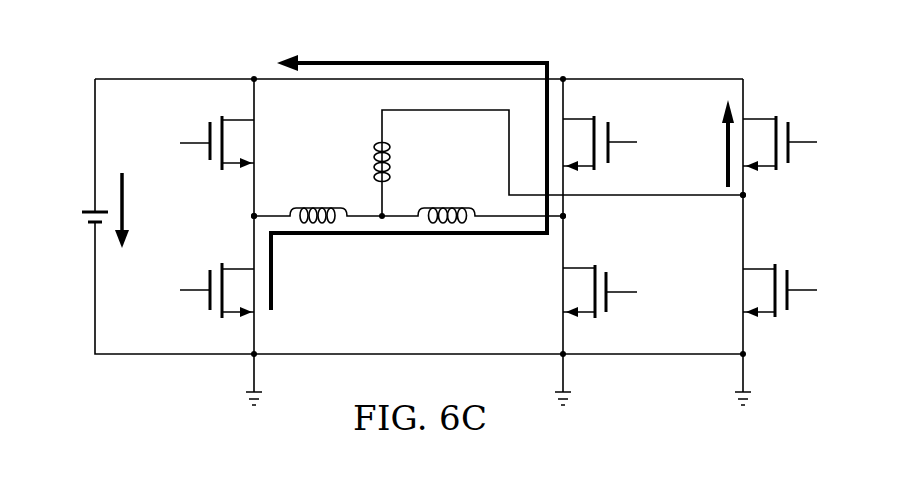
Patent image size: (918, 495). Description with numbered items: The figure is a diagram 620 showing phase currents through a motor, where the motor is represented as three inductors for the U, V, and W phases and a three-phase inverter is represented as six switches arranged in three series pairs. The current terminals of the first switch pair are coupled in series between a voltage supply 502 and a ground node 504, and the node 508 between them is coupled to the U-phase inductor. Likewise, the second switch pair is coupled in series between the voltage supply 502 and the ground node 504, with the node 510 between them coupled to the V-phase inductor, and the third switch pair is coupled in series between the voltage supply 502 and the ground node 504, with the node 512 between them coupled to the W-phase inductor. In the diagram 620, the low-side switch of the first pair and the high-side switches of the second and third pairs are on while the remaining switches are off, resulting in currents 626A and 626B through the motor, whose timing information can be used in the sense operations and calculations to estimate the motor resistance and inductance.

The diagram 620 is at (99, 53).
The voltage supply 502 is at (82, 217).
The ground node 504 is at (245, 398).
The node 508 is at (250, 215).
The node 510 is at (570, 220).
The node 512 is at (750, 198).
The current 626A is at (407, 236).
The current 626B is at (725, 153).